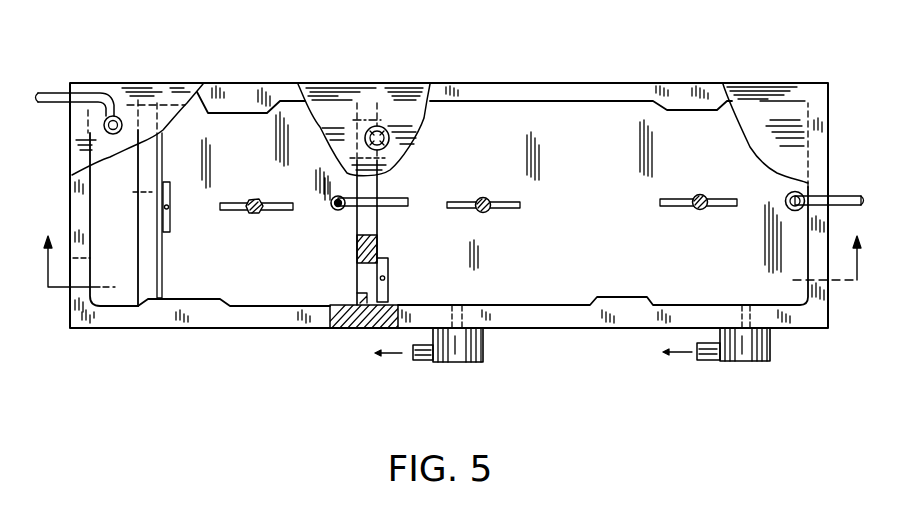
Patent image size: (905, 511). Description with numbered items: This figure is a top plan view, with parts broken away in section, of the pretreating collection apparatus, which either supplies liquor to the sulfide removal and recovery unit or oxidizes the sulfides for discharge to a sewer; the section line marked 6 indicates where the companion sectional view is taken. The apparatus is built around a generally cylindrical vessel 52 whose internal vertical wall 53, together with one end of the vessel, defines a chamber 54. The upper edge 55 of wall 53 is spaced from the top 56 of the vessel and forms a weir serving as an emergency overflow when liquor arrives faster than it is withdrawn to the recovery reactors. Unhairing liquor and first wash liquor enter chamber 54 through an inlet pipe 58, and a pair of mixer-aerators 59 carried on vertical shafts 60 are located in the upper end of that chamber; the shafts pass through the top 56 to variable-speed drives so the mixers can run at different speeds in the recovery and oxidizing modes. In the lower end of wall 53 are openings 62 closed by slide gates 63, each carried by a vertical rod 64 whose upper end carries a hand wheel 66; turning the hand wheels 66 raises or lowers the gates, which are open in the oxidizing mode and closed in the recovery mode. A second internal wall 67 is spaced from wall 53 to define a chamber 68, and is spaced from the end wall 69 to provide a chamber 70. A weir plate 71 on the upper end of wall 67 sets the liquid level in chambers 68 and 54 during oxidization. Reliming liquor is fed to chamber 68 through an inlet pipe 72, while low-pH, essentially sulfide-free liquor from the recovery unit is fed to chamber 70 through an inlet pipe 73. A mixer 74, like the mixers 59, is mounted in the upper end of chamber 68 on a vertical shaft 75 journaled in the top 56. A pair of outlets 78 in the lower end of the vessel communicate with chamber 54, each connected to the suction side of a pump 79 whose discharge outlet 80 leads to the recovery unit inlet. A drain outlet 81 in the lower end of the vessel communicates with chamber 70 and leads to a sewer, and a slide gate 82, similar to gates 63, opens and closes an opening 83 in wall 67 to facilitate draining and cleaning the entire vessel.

The vessel 52 is at (666, 78).
The internal vertical wall 53 is at (355, 238).
The chamber 54 is at (565, 135).
The upper edge of wall 55 is at (367, 224).
The top 56 is at (768, 112).
The inlet pipe 58 is at (843, 195).
The mixer-aerators 59 is at (493, 210).
The vertical shafts 60 is at (484, 199).
The openings 62 is at (322, 150).
The slide gates 63 is at (389, 263).
The vertical rod 64 is at (385, 278).
The hand wheels 66 is at (395, 137).
The second internal wall 67 is at (150, 184).
The chamber 68 is at (247, 127).
The end wall 69 is at (72, 152).
The chamber 70 is at (113, 298).
The weir plate 71 is at (162, 273).
The inlet pipe 72 is at (392, 196).
The inlet pipe 73 is at (52, 92).
The mixer 74 is at (250, 202).
The vertical shaft 75 is at (252, 214).
The outlets 78 is at (468, 308).
The pump 79 is at (470, 364).
The discharge outlet 80 is at (426, 361).
The drain outlet 81 is at (85, 255).
The slide gate 82 is at (170, 228).
The opening 83 is at (140, 195).
The section line 6- 6 is at (452, 249).